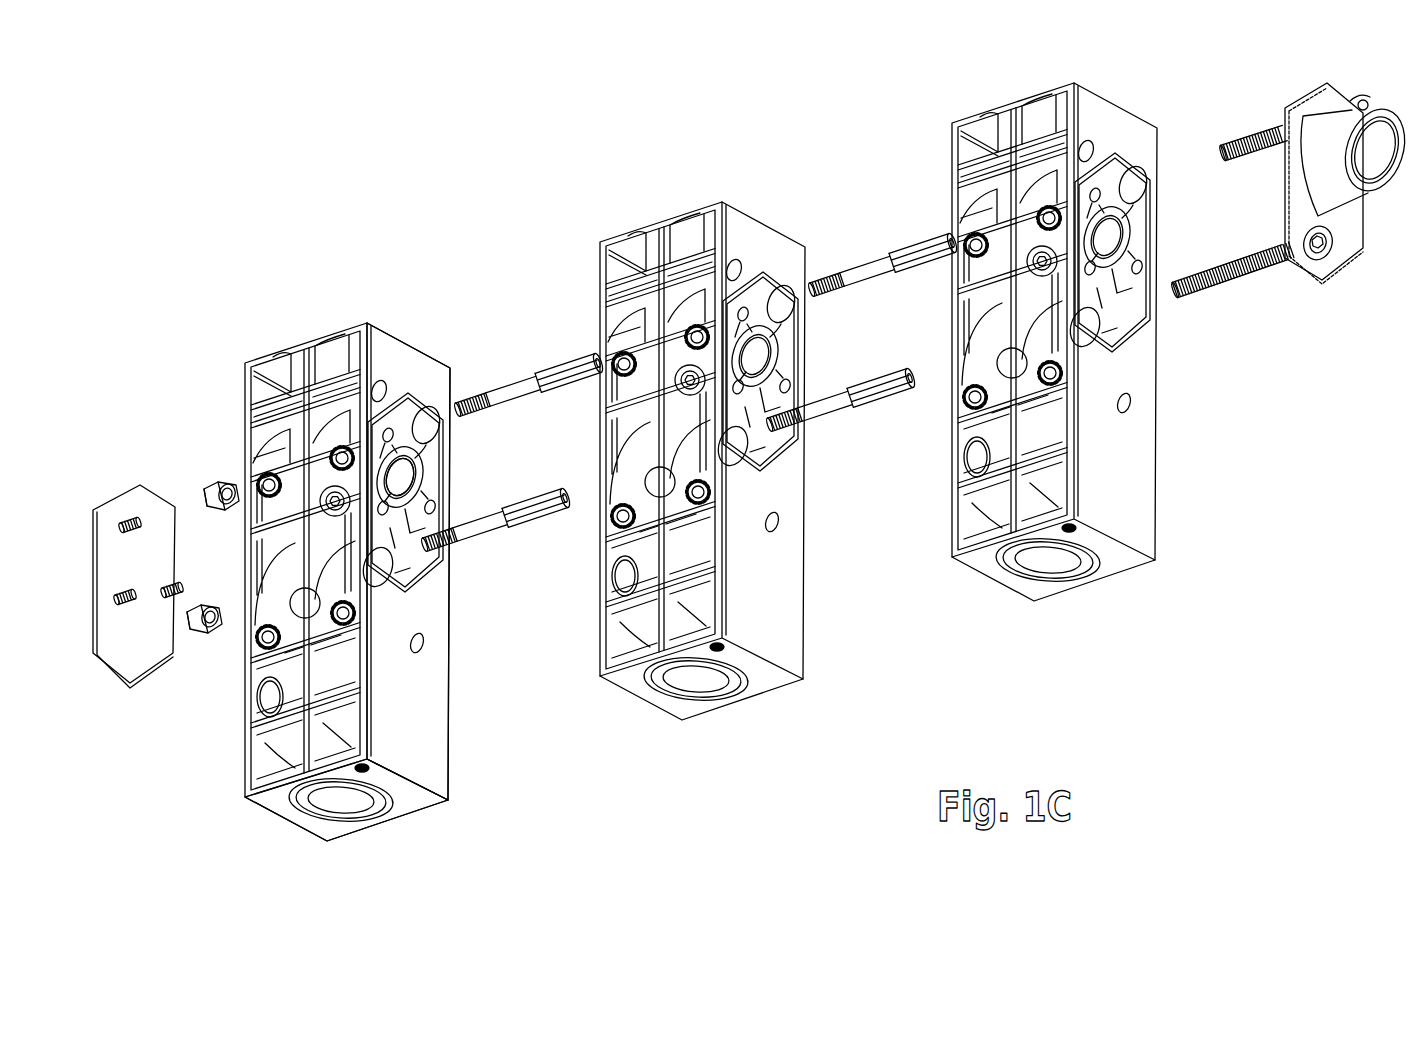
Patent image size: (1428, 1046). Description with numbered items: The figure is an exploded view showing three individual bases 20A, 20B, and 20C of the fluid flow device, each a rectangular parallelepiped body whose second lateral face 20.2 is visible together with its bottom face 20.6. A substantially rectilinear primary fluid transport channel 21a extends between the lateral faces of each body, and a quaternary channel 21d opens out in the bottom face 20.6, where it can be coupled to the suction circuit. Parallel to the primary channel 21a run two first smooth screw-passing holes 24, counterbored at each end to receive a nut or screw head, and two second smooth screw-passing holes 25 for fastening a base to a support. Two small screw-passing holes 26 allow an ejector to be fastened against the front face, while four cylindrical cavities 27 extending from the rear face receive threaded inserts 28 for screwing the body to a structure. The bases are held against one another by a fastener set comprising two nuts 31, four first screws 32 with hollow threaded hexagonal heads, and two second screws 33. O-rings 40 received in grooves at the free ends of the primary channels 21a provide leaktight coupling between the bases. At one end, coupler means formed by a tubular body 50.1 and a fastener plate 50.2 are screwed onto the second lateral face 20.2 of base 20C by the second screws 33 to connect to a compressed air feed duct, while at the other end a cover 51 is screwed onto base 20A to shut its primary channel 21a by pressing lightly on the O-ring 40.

The base 20A is at (405, 326).
The base 20B is at (768, 210).
The base 20C is at (1144, 100).
The second lateral face 20.2 is at (444, 780).
The bottom face 20.6 is at (408, 806).
The primary fluid transport channel 21a is at (405, 473).
The quaternary channel 21d is at (342, 806).
The first smooth screw-passing hole 24 is at (420, 578).
The second smooth screw-passing hole 25 is at (386, 387).
The small screw-passing hole 26 is at (265, 706).
The cylindrical cavity 27 is at (271, 474).
The threaded insert 28 is at (343, 447).
The nut 31 is at (208, 483).
The first screw 32 is at (527, 385).
The second screw 33 is at (1250, 134).
The O-ring 40 is at (410, 488).
The tubular body 50.1 is at (1360, 210).
The fastener plate 50.2 is at (1337, 93).
The cover 51 is at (125, 505).